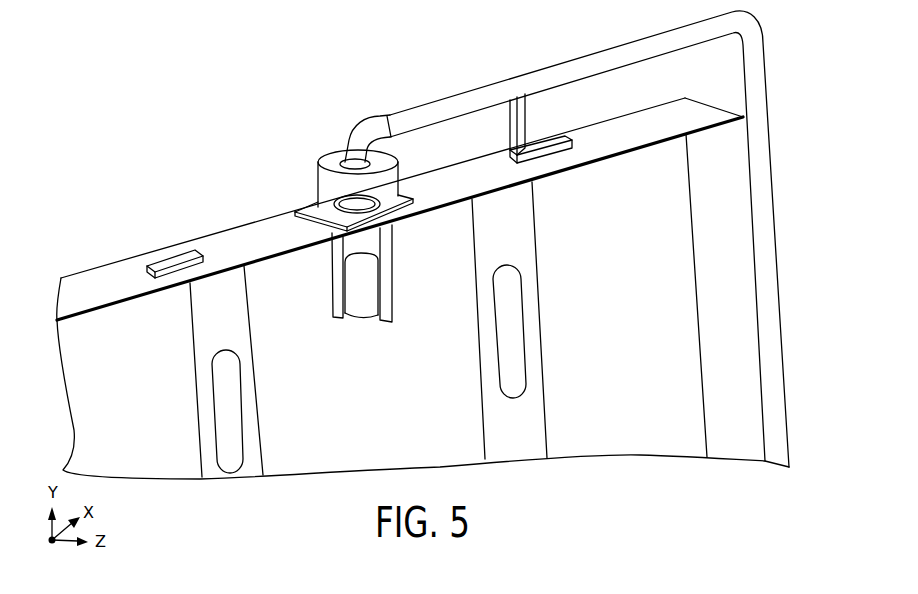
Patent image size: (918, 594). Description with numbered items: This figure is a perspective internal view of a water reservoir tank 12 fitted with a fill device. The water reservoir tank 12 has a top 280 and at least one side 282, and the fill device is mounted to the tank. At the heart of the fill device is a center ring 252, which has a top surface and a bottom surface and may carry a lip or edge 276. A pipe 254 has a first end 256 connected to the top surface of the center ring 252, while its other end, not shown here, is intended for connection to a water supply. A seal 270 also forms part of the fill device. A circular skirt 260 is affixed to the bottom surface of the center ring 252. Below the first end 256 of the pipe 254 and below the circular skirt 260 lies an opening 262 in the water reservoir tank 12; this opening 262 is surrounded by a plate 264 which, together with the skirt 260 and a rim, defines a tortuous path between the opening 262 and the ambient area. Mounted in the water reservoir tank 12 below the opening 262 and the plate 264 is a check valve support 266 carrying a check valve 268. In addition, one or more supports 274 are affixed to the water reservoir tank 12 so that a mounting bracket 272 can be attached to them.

The water reservoir tank 12 is at (115, 236).
The center ring 252 is at (330, 159).
The pipe 254 is at (466, 97).
The first end 256 is at (358, 135).
The circular skirt 260 is at (388, 197).
The opening 262 is at (407, 217).
The plate 264 is at (312, 210).
The check valve support 266 is at (385, 303).
The check valve 268 is at (370, 270).
The seal 270 is at (370, 157).
The mounting bracket 272 is at (550, 147).
The supports 274 is at (562, 157).
The lip or edge 276 is at (313, 168).
The top 280 is at (612, 130).
The side 282 is at (703, 100).